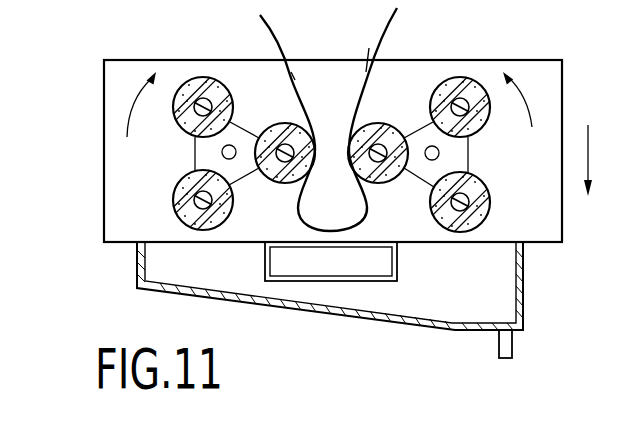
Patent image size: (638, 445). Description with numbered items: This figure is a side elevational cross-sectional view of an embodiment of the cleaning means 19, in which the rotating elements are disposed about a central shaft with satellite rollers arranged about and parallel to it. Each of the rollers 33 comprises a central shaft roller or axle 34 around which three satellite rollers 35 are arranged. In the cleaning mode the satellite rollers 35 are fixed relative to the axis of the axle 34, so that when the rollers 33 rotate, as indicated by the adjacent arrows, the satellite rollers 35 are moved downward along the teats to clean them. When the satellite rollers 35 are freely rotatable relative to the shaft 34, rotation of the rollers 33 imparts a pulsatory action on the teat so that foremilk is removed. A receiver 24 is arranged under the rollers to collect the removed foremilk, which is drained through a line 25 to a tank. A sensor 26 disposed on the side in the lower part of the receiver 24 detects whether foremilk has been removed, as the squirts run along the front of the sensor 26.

The cleaning means 19 is at (98, 198).
The receiver 24 is at (398, 325).
The line 25 is at (501, 343).
The sensor 26 is at (385, 262).
The rollers 33 is at (248, 178).
The central shaft roller or axle 34 is at (222, 152).
The satellite rollers 35 is at (206, 77).